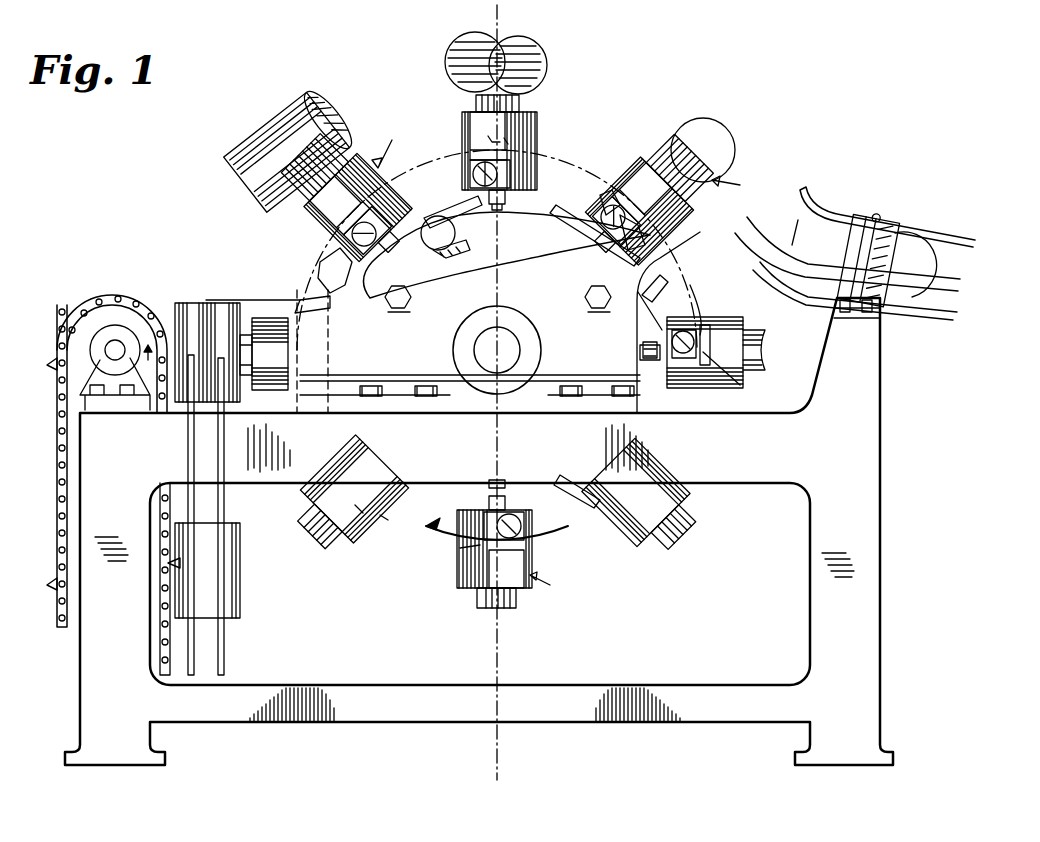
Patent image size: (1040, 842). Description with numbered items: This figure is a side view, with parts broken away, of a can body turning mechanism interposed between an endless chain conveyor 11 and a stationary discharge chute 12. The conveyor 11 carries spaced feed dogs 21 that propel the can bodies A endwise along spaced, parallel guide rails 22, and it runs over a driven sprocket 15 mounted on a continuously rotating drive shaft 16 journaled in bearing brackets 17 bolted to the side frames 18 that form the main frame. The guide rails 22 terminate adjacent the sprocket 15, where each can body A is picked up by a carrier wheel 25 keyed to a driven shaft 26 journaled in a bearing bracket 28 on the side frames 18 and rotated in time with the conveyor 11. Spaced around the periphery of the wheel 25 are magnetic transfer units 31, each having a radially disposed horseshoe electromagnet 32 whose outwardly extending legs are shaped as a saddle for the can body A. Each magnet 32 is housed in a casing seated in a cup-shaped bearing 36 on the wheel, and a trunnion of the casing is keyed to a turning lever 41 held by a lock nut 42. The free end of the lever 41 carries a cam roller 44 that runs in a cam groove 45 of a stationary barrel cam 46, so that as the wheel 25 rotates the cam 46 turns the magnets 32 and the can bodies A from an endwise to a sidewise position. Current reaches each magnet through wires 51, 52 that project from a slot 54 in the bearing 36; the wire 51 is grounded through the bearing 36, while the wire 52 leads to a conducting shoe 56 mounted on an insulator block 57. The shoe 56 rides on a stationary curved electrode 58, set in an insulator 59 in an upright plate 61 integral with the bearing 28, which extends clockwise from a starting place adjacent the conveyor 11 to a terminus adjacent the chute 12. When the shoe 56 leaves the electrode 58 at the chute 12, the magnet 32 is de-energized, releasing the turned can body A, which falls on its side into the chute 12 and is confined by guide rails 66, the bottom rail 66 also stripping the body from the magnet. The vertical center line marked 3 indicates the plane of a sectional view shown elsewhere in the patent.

The section line 3- 3 is at (465, 762).
The endless chain conveyor 11 is at (57, 437).
The stationary discharge chute 12 is at (892, 208).
The driven sprocket 15 is at (85, 312).
The drive shaft 16 is at (115, 350).
The bearing brackets 17 is at (105, 372).
The side frames 18 is at (479, 531).
The feed dogs 21 is at (178, 620).
The guide rails 22 is at (220, 645).
The carrier wheel 25 is at (425, 165).
The driven shaft 26 is at (508, 345).
The bearing bracket 28 is at (530, 360).
The magnetic transfer unit 31 is at (561, 353).
The horseshoe magnet 32 is at (720, 528).
The cup-shaped bearing 36 is at (630, 530).
The turning lever 41 is at (548, 498).
The lock nut 42 is at (508, 485).
The cam roller 44 is at (455, 235).
The cam groove 45 is at (458, 251).
The stationary barrel cam 46 is at (530, 248).
The wire 51 is at (368, 535).
The wire 52 is at (392, 520).
The slot 54 is at (500, 548).
The current conducting shoe 56 is at (492, 560).
The insulator block 57 is at (545, 530).
The stationary curved electrode 58 is at (598, 198).
The insulator 59 is at (636, 226).
The upright plate 61 is at (498, 322).
The guide rails 66 is at (795, 240).
The can bodies A is at (935, 256).